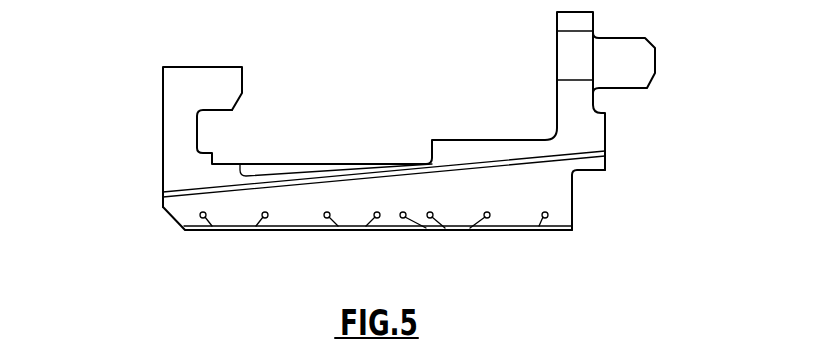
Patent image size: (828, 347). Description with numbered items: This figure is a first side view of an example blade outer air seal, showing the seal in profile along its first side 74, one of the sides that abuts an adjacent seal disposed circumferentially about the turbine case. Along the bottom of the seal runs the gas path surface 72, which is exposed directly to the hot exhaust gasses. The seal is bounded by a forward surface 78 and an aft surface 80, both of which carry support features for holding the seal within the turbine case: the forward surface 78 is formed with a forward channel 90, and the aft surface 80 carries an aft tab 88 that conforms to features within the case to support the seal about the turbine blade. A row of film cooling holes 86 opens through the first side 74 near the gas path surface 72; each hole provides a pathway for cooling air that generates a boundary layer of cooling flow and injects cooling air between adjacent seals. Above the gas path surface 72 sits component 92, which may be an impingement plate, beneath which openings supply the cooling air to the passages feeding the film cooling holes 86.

The gas path surface 72 is at (297, 240).
The first side 74 is at (530, 187).
The forward surface 78 is at (158, 150).
The aft surface 80 is at (612, 130).
The film cooling holes 86 is at (256, 230).
The aft tab 88 is at (658, 60).
The forward channel 90 is at (224, 122).
The component 92 is at (373, 155).